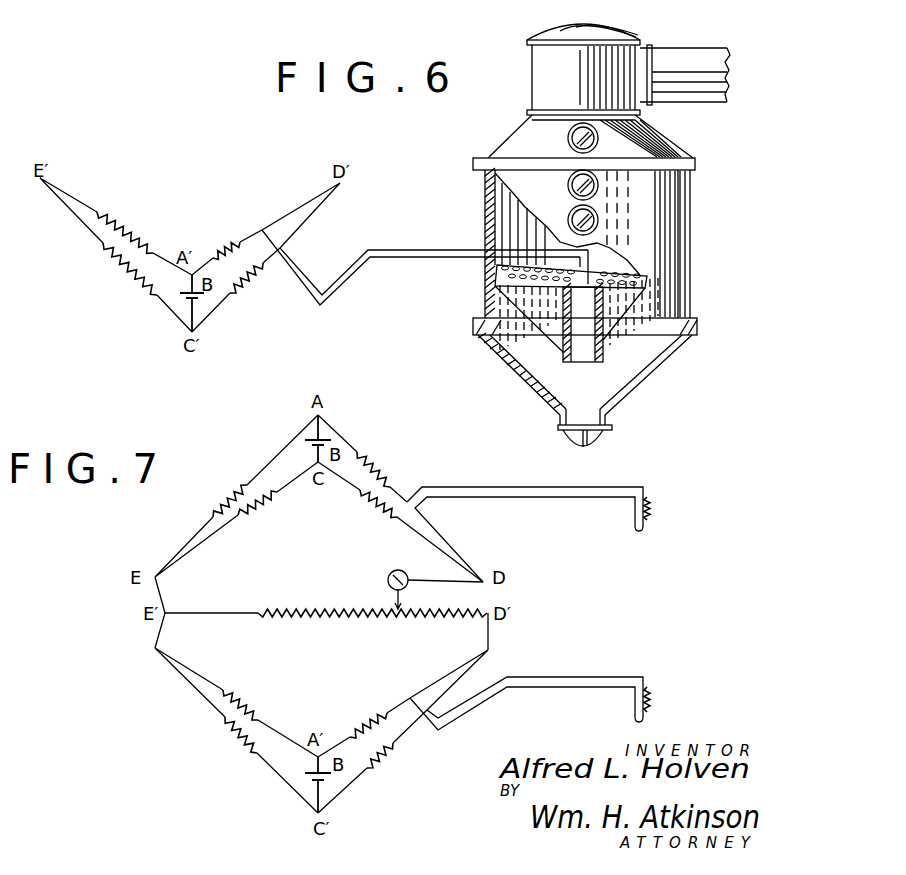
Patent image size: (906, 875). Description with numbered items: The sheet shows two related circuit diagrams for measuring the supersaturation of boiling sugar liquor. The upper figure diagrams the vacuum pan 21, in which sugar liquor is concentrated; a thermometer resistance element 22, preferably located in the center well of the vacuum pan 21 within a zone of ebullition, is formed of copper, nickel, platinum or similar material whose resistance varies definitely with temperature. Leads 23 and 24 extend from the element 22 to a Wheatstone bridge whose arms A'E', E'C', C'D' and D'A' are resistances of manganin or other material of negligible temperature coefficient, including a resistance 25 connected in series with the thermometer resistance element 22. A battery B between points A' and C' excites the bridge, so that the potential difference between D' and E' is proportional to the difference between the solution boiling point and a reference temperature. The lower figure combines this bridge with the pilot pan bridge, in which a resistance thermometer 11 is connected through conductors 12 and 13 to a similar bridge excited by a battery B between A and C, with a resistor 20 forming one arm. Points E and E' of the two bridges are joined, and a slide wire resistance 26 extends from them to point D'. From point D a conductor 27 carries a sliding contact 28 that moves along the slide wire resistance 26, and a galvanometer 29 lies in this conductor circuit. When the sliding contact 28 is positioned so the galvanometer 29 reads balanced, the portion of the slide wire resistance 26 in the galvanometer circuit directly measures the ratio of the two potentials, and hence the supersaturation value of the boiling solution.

In FIG. 7, the resistance thermometer 11 is at (648, 516).
In FIG. 7, the conductor 12 is at (564, 498).
In FIG. 7, the conductor 13 is at (525, 496).
In FIG. 7, the resistor arm 20 is at (382, 465).
In FIG. 6, the vacuum pan 21 is at (484, 196).
In FIG. 6, the thermometer resistance element 22 is at (600, 268).
In FIG. 7, the thermometer resistance element 22 is at (651, 705).
In FIG. 6, the lead 23 is at (385, 249).
In FIG. 7, the lead 23 is at (590, 676).
In FIG. 6, the lead 24 is at (387, 259).
In FIG. 7, the lead 24 is at (598, 688).
In FIG. 6, the resistance 25 is at (227, 242).
In FIG. 7, the resistance 25 is at (367, 718).
In FIG. 7, the slide wire resistance 26 is at (345, 618).
In FIG. 7, the conductor 27 is at (438, 563).
In FIG. 7, the sliding contact 28 is at (404, 610).
In FIG. 7, the galvanometer 29 is at (390, 573).